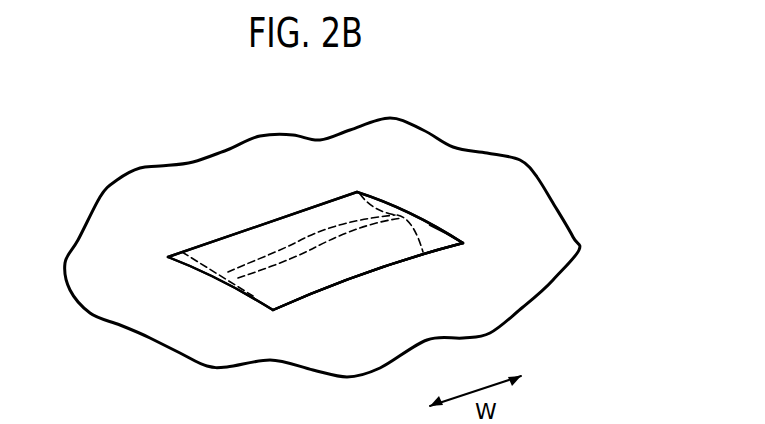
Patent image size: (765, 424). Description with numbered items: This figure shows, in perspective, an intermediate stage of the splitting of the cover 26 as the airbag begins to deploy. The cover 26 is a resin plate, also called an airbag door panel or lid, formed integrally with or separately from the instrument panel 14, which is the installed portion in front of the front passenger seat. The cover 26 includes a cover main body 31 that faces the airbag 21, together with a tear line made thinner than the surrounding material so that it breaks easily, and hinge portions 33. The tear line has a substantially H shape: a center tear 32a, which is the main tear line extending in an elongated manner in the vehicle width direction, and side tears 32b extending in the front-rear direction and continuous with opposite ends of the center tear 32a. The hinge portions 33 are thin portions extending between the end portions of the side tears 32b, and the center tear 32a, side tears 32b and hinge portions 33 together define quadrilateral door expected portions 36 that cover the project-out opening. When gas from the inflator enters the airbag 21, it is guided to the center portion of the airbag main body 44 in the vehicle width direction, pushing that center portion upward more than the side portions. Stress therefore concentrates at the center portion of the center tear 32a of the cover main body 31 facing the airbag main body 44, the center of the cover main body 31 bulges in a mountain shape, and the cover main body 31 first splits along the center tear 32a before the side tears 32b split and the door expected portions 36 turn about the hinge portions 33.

The instrument panel 14 is at (549, 211).
The cover main body 31 is at (334, 208).
The center tear 32a is at (372, 207).
The side tear 32b is at (434, 221).
The hinge portion 33 is at (249, 222).
The door expected portion 36 is at (218, 243).
The cover 26 is at (452, 232).
The airbag 21 is at (391, 276).
The airbag main body 44 is at (421, 247).